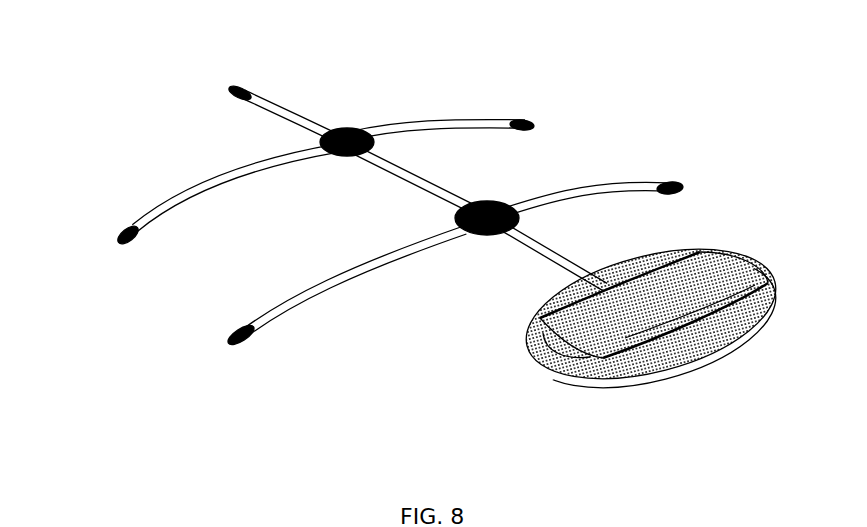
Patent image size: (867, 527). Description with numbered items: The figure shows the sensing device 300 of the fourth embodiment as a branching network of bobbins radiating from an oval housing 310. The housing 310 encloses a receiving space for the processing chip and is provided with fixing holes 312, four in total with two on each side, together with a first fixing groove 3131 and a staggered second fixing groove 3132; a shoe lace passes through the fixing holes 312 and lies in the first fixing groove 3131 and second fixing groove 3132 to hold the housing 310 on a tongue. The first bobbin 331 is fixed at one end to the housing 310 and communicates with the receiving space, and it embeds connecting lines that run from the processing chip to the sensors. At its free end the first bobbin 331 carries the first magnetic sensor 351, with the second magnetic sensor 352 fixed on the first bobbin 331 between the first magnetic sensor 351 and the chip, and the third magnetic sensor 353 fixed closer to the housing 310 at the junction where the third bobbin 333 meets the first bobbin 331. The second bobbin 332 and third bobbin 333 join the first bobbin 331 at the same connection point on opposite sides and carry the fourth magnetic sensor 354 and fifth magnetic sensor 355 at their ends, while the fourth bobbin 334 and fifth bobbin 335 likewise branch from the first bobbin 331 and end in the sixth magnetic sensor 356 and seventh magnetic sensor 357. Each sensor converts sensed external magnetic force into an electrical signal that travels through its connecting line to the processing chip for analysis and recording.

The sensing device 300 is at (500, 483).
The housing 310 is at (762, 255).
The fixing holes 312 is at (551, 368).
The first fixing groove 3131 is at (627, 312).
The second fixing groove 3132 is at (740, 285).
The first bobbin 331 is at (287, 112).
The second bobbin 332 is at (178, 195).
The third bobbin 333 is at (461, 121).
The fourth bobbin 334 is at (289, 297).
The fifth bobbin 335 is at (589, 194).
The first magnetic sensor 351 is at (232, 93).
The second magnetic sensor 352 is at (325, 143).
The third magnetic sensor 353 is at (460, 219).
The fourth magnetic sensor 354 is at (138, 237).
The fifth magnetic sensor 355 is at (530, 121).
The sixth magnetic sensor 356 is at (253, 342).
The seventh magnetic sensor 357 is at (684, 185).